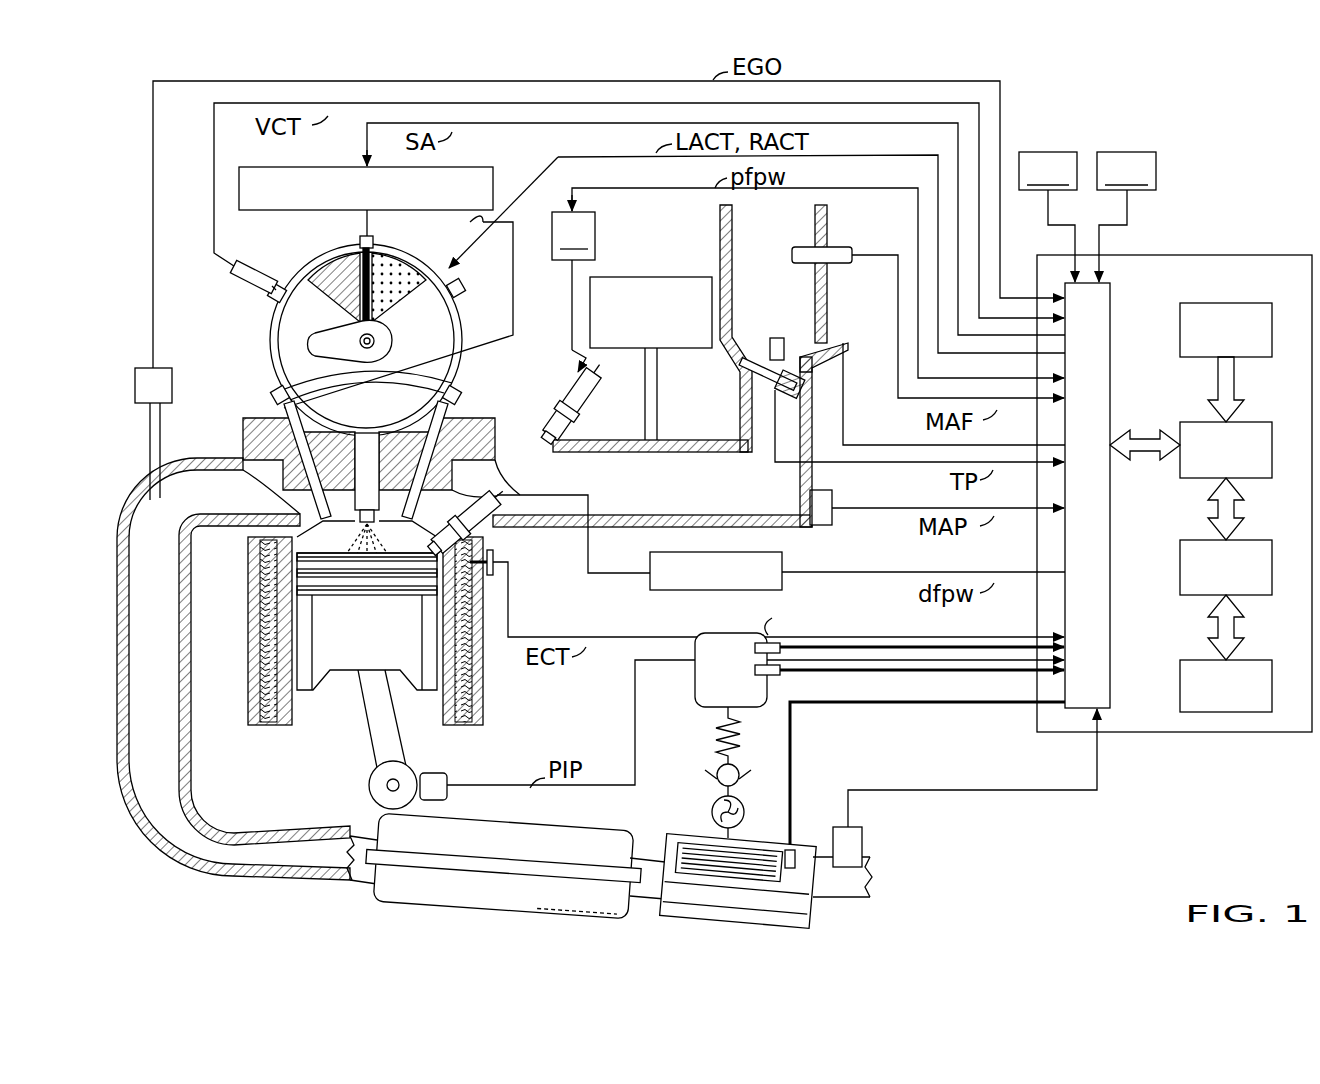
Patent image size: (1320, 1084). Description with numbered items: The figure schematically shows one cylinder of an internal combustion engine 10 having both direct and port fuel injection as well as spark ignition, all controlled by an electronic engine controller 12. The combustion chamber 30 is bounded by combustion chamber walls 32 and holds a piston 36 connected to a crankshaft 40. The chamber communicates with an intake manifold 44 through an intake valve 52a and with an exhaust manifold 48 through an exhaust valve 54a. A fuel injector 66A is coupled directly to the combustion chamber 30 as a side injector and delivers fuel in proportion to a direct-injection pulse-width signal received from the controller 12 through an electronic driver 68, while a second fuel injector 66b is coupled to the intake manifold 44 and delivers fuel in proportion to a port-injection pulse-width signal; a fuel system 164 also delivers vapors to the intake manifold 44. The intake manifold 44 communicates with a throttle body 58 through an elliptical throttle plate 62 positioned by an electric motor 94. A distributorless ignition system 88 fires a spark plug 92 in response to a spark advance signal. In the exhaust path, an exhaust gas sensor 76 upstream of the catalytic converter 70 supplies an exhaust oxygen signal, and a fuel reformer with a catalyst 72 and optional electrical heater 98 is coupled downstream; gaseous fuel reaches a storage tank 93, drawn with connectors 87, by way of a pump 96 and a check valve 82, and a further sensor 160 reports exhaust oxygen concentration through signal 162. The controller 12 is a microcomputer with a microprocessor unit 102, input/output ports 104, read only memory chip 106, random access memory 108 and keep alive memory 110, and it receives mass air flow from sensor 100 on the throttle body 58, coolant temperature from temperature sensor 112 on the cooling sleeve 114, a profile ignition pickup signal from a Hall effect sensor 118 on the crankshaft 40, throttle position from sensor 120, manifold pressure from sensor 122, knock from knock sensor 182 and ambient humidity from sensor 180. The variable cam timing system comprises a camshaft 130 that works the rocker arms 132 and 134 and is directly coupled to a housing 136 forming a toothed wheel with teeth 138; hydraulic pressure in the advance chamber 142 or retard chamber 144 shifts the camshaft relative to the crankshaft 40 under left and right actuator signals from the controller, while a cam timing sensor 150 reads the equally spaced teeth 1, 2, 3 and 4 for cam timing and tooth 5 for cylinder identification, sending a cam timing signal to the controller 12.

The tooth 1 is at (358, 242).
The tooth 2 is at (463, 292).
The tooth 3 is at (410, 400).
The tooth 4 is at (272, 393).
The tooth 5 is at (270, 296).
The engine 10 is at (531, 352).
The electronic engine controller 12 is at (1263, 255).
The combustion chamber 30 is at (315, 570).
The combustion chamber walls 32 is at (296, 710).
The piston 36 is at (367, 660).
The crankshaft 40 is at (370, 790).
The intake manifold 44 is at (712, 502).
The exhaust manifold 48 is at (135, 535).
The intake valve 52a is at (455, 505).
The exhaust valve 54a is at (300, 512).
The throttle body 58 is at (745, 432).
The throttle plate 62 is at (772, 342).
The fuel injector 66A is at (495, 528).
The fuel injector 66b is at (558, 380).
The electronic driver 68 is at (783, 568).
The catalytic converter 70 is at (456, 822).
The catalyst 72 is at (705, 838).
The exhaust gas sensor 76 is at (138, 368).
The check valve 82 is at (716, 775).
The sensors 87 is at (782, 675).
The distributorless ignition system 88 is at (493, 192).
The spark plug 92 is at (355, 440).
The storage tank 93 is at (695, 705).
The electric motor 94 is at (820, 343).
The pump 96 is at (712, 810).
The electrical heater 98 is at (796, 848).
The mass air flow sensor 100 is at (832, 248).
The microprocessor unit 102 is at (1238, 422).
The input/output ports 104 is at (1112, 333).
The read only memory chip 106 is at (1210, 303).
The random access memory 108 is at (1240, 540).
The keep alive memory 110 is at (1240, 660).
The temperature sensor 112 is at (496, 572).
The cooling sleeve 114 is at (480, 690).
The Hall effect sensor 118 is at (435, 775).
The throttle position sensor 120 is at (748, 372).
The manifold pressure sensor 122 is at (833, 500).
The camshaft 130 is at (320, 345).
The rocker arm 132 is at (270, 405).
The rocker arm 134 is at (450, 410).
The housing 136 is at (270, 358).
The teeth 138 is at (455, 290).
The advance chamber 142 is at (392, 265).
The retard chamber 144 is at (325, 268).
The cam timing sensor 150 is at (242, 287).
The sensor 160 is at (862, 835).
The signal 162 is at (1032, 792).
The fuel system 164 is at (640, 277).
The sensor 180 is at (1048, 217).
The knock sensor 182 is at (1126, 217).